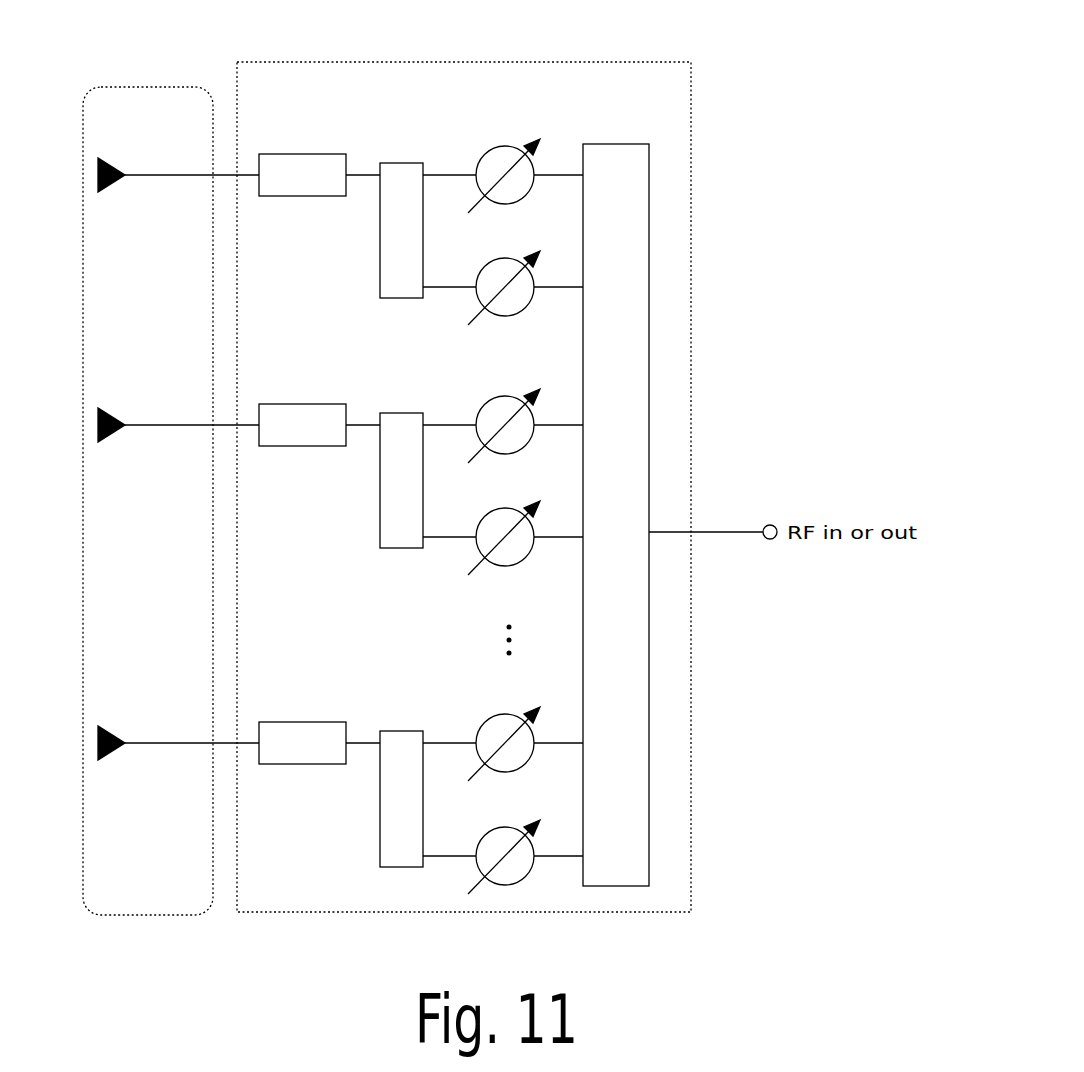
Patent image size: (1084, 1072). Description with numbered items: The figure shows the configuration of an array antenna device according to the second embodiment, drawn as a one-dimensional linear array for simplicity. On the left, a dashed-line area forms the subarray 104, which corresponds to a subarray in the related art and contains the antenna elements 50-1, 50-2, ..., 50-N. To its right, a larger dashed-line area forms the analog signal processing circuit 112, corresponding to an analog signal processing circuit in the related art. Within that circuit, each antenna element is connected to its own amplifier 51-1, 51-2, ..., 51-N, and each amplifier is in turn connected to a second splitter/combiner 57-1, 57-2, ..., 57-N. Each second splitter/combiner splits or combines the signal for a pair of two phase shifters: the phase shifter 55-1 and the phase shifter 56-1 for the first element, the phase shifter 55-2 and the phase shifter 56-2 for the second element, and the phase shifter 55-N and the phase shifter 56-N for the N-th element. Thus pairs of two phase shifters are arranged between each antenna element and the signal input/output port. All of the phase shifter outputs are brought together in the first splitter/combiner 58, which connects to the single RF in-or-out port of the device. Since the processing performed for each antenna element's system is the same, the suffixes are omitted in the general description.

The subarray 104 is at (152, 84).
The analog signal processing circuit 112 is at (603, 62).
The first splitter/combiner 58 is at (616, 143).
The antenna element 50-1 is at (118, 160).
The antenna element 50-2 is at (118, 410).
The antenna element 50-N is at (118, 728).
The amplifier 51-1 is at (307, 154).
The amplifier 51-2 is at (307, 404).
The amplifier 51-N is at (307, 722).
The second splitter/combiner 57-1 is at (405, 163).
The second splitter/combiner 57-2 is at (405, 413).
The second splitter/combiner 57-N is at (405, 731).
The phase shifter 55-1 is at (508, 146).
The phase shifter 55-2 is at (508, 396).
The phase shifter 55-N is at (508, 714).
The phase shifter 56-1 is at (508, 258).
The phase shifter 56-2 is at (508, 508).
The phase shifter 56-N is at (508, 827).